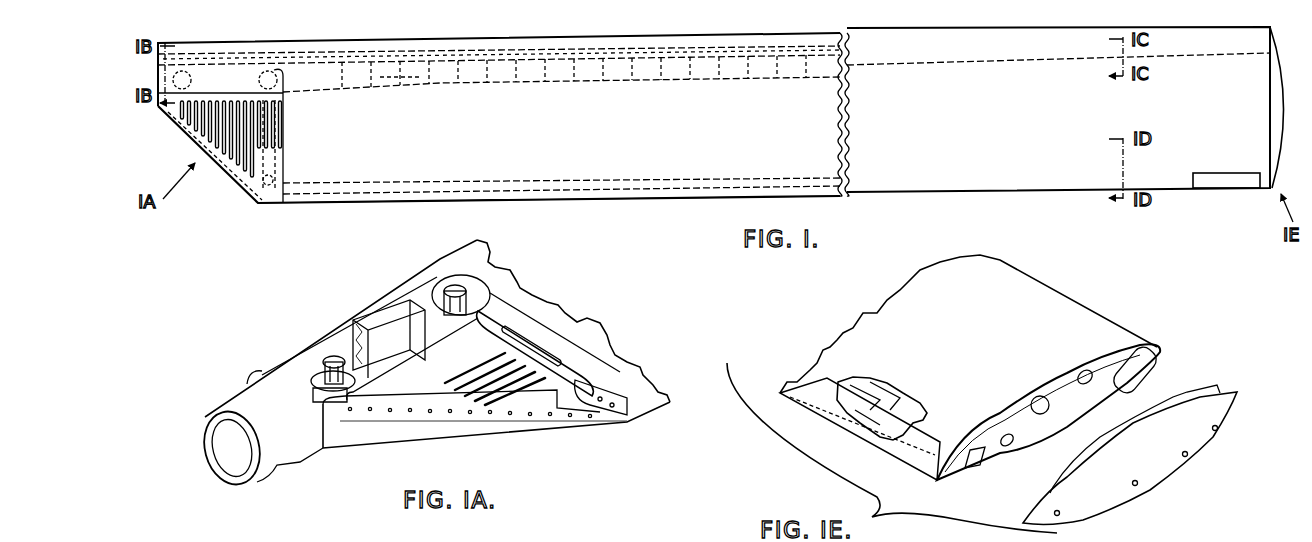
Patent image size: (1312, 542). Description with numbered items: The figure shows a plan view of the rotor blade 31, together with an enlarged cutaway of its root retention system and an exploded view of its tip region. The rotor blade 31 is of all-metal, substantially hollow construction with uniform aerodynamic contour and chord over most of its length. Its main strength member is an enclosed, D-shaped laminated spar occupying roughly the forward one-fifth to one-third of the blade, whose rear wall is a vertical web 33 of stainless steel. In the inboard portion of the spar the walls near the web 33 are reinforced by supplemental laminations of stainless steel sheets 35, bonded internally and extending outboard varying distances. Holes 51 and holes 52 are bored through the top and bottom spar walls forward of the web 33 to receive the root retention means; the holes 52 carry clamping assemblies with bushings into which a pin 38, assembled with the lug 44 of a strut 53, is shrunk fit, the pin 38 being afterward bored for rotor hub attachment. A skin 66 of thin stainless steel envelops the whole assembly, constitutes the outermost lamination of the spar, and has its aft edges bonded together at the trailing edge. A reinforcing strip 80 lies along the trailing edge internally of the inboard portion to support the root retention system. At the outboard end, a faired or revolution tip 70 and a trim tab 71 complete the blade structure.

In FIG. 1, the rotor blade 31 is at (982, 199).
In FIG. 1, the vertical web 33 is at (570, 81).
In FIG. 1, the supplemental laminations of stainless steel sheets 35 is at (442, 70).
In FIG. 1A, the pin 38 is at (324, 375).
In FIG. 1A, the lug 44 is at (323, 402).
In FIG. 1, the holes 51 is at (203, 60).
In FIG. 1, the holes 52 is at (278, 72).
In FIG. 1A, the strut 53 is at (540, 362).
In FIG. 1, the skin 66 is at (687, 143).
In FIG. 1E, the skin 66 is at (877, 313).
In FIG. 1, the faired or revolution tip 70 is at (1282, 104).
In FIG. 1E, the faired or revolution tip 70 is at (1205, 443).
In FIG. 1, the trim tab 71 is at (1224, 184).
In FIG. 1E, the trim tab 71 is at (890, 448).
In FIG. 1, the reinforcing strip 80 is at (424, 188).